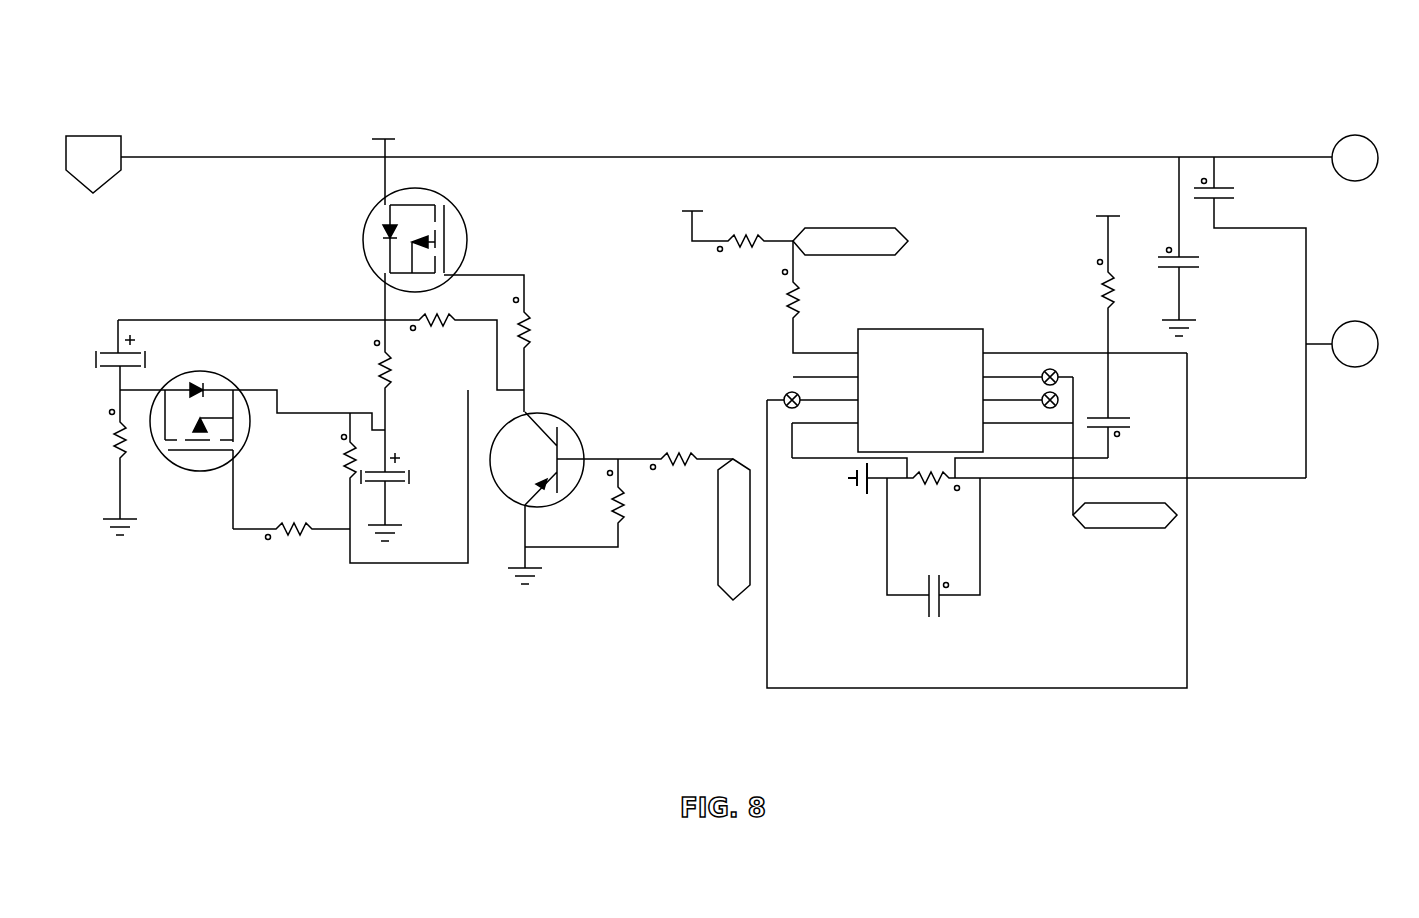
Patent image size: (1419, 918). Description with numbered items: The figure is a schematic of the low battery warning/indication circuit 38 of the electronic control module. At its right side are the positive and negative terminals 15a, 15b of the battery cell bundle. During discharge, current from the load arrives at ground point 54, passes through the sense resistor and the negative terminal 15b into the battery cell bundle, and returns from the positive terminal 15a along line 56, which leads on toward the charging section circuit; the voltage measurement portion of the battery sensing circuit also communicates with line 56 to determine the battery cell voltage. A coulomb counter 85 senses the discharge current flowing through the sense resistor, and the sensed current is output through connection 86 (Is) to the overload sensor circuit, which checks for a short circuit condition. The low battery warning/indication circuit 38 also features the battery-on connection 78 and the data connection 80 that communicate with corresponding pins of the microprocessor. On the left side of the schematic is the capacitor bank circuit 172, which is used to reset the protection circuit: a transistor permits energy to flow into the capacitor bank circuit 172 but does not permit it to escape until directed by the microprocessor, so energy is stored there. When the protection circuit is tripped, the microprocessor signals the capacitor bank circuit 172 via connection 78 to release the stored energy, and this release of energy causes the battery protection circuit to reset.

The low battery warning/indication circuit 38 is at (168, 60).
The line 56 is at (912, 157).
The connection (DATA1) 80 is at (856, 229).
The coulomb counter 85 is at (952, 329).
The ground point 54 is at (846, 482).
The connection (Is) 86 is at (1130, 528).
The connection (BATT ON) 78 is at (718, 567).
The capacitor bank circuit 172 is at (230, 585).
The positive terminal of the battery cell bundle 15a is at (1372, 176).
The negative terminal of the battery cell bundle 15b is at (1372, 362).